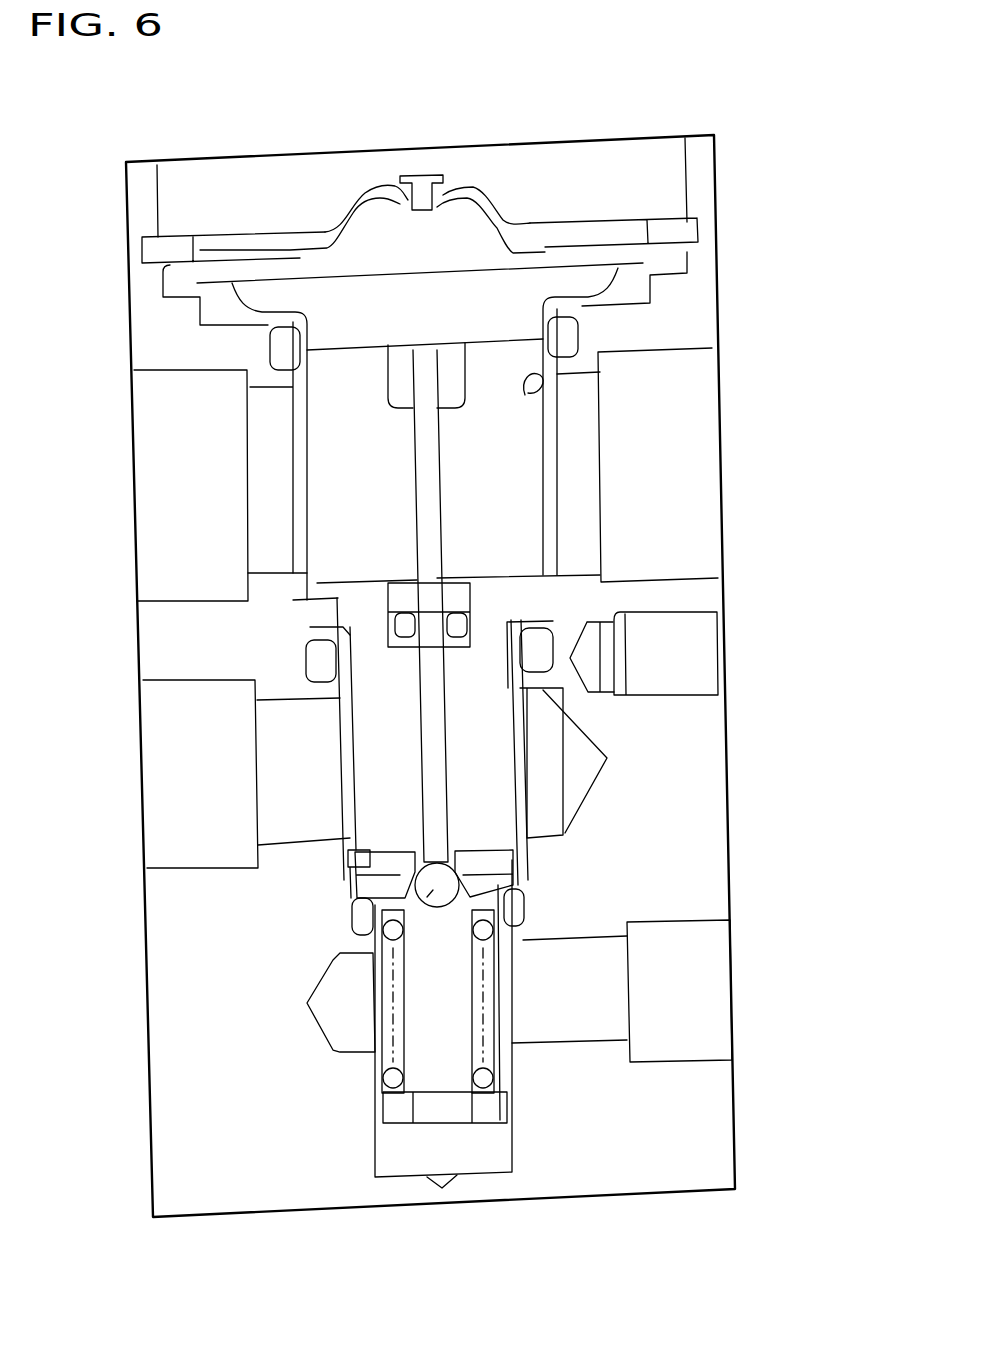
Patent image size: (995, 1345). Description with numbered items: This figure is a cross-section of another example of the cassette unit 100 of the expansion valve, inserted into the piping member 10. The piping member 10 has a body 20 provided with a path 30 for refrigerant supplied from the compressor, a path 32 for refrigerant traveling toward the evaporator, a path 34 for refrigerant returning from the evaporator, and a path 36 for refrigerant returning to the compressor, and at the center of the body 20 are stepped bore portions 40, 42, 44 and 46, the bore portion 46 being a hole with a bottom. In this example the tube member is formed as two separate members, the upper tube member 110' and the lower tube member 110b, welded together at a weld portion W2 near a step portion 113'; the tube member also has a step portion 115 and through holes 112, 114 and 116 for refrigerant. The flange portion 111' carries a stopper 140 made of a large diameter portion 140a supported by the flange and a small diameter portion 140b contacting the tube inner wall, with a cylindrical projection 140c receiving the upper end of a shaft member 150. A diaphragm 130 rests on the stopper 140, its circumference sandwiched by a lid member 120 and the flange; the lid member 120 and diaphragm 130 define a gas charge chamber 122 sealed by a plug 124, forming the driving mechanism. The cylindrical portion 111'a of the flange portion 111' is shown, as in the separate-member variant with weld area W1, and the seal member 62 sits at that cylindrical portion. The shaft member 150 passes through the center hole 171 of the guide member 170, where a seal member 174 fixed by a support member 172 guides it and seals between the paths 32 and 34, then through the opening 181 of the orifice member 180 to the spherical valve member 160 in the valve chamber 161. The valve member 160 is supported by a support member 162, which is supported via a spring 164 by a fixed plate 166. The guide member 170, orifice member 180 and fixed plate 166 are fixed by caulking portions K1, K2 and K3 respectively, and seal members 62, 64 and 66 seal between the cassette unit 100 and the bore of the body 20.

The piping member 10 is at (718, 200).
The cassette unit 100 is at (530, 185).
The bore portion 40 is at (203, 190).
The stopper 140 is at (353, 237).
The lid member 120 is at (357, 300).
The gas charge chamber 122 is at (390, 220).
The plug 124 is at (442, 178).
The large diameter portion 140a is at (530, 268).
The diaphragm 130 is at (600, 250).
The flange member 111' is at (659, 399).
The cylindrical portion 111'a is at (673, 418).
The small diameter portion 140b is at (578, 330).
The weld area W1 is at (542, 385).
The tube member 110' is at (601, 606).
The cylindrical projection 140c is at (468, 410).
The seal member 62 is at (280, 340).
The bore portion 42 is at (265, 352).
The path 34 is at (183, 450).
The shaft member 150 is at (420, 463).
The path 36 is at (700, 505).
The through hole 112 is at (470, 578).
The support member 172 is at (470, 583).
The seal member 174 is at (470, 598).
The caulking portion K1 is at (323, 613).
The guide member 170 is at (317, 632).
The bore portion 44 is at (327, 692).
The center hole 171 is at (420, 673).
The path 32 is at (183, 785).
The step portion 113' is at (675, 653).
The seal member 64 is at (545, 660).
The weld portion W2 is at (553, 628).
The body 20 is at (683, 745).
The tube member 110b is at (515, 778).
The through hole 114 is at (607, 758).
The orifice member 180 is at (350, 830).
The opening 181 is at (350, 880).
The valve chamber 161 is at (350, 908).
The caulking portion K2 is at (523, 873).
The step portion 115 is at (525, 895).
The seal member 66 is at (527, 935).
The valve member 160 is at (350, 920).
The support member 162 is at (355, 970).
The spring 164 is at (345, 1077).
The through hole 116 is at (505, 990).
The path 30 is at (700, 1022).
The caulking portion K3 is at (510, 1103).
The fixed plate 166 is at (397, 1112).
The bore portion 46 is at (373, 1152).